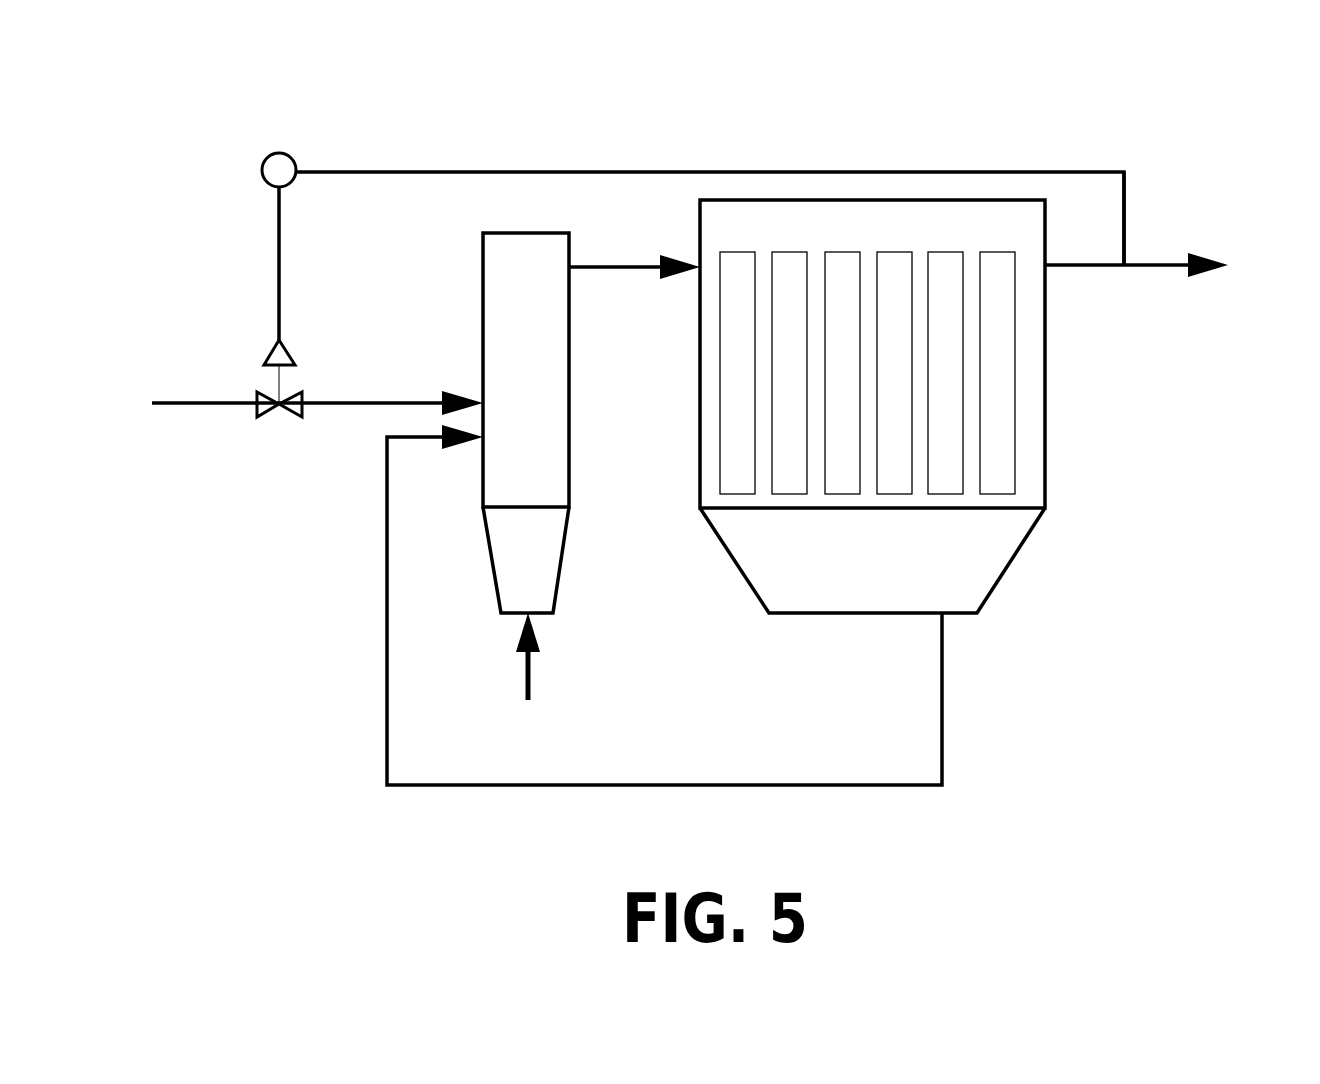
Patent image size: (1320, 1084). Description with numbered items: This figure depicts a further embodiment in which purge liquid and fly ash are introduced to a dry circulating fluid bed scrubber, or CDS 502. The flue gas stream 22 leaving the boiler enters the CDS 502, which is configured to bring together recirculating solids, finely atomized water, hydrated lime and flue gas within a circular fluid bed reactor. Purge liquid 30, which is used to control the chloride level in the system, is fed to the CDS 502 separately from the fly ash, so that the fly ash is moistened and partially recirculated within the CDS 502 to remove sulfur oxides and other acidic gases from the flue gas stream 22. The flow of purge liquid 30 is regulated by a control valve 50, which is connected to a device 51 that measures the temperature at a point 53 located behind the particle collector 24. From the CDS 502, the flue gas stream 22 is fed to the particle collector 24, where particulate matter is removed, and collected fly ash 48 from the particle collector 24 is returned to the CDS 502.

The dry circulating fluid bed scrubber (CDS) 502 is at (481, 300).
The purge liquid 30 is at (200, 403).
The control valve 50 is at (288, 412).
The device 51 is at (270, 158).
The particle collector 24 is at (1050, 400).
The flue gas stream 22 is at (650, 272).
The fly ash 48 is at (944, 665).
The point 53 is at (1128, 263).